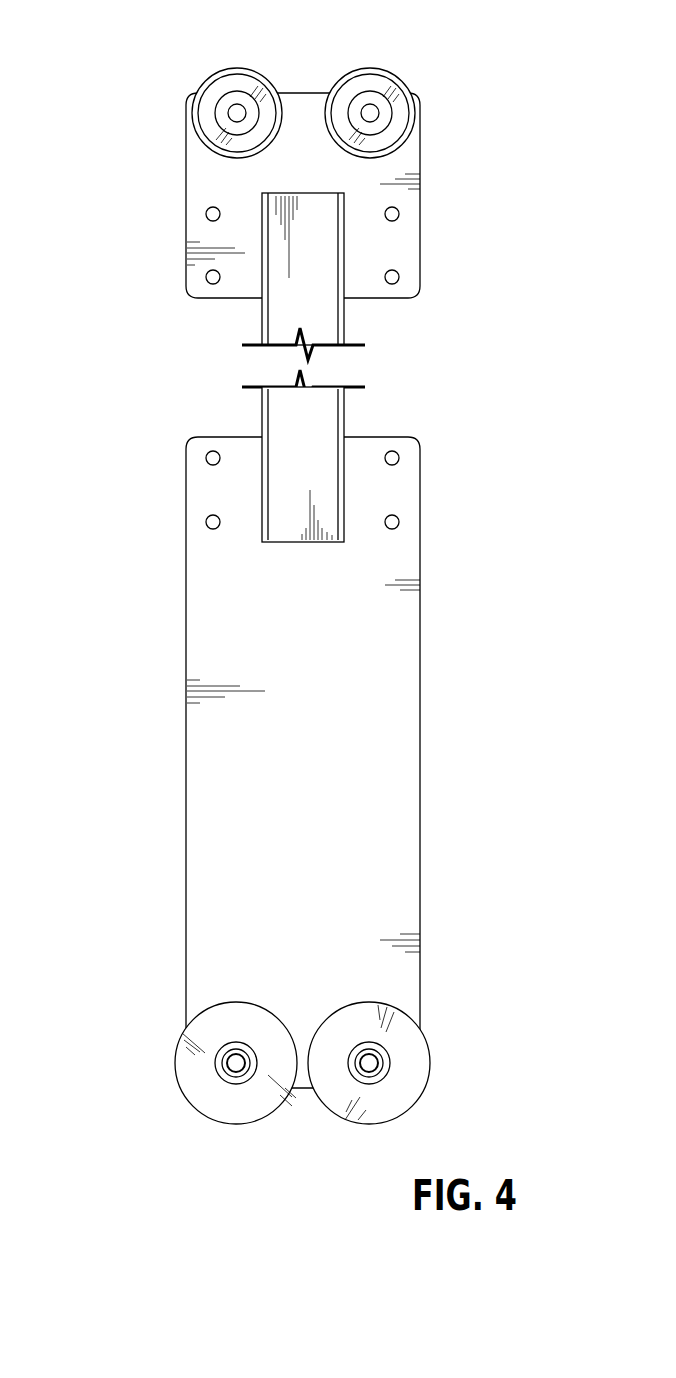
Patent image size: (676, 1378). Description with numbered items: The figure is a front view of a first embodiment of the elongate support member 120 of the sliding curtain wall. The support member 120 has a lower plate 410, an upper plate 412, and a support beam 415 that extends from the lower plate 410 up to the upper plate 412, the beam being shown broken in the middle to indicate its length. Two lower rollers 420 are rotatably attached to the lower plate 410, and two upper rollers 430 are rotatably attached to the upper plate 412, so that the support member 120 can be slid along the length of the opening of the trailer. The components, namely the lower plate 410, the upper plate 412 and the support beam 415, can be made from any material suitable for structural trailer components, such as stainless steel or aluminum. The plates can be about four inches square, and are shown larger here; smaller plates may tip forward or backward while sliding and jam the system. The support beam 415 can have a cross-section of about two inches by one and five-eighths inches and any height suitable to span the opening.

The lower plate 410 is at (308, 723).
The upper plate 412 is at (197, 169).
The support member 120 is at (263, 307).
The support beam 415 is at (308, 418).
The upper rollers 430 is at (357, 63).
The lower rollers 420 is at (362, 1013).